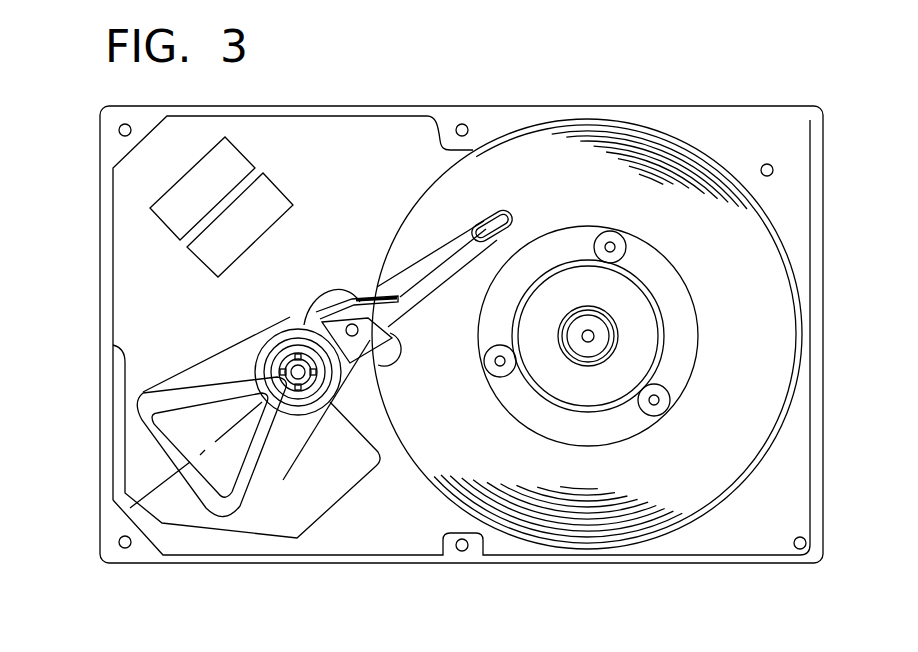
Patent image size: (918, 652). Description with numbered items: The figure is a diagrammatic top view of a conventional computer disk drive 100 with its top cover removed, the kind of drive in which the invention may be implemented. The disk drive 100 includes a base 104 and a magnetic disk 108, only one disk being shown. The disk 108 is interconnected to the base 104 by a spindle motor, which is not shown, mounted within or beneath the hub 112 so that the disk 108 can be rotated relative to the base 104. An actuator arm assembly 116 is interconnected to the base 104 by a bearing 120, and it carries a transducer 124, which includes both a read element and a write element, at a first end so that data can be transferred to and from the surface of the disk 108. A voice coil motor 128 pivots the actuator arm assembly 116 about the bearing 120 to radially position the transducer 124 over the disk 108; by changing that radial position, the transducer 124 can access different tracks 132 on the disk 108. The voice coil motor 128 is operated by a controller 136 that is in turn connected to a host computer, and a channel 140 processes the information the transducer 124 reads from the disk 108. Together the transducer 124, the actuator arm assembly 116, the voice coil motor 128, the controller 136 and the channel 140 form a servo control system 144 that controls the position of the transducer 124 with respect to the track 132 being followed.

The disk drive 100 is at (690, 96).
The base 104 is at (402, 527).
The magnetic disk 108 is at (606, 517).
The hub 112 is at (597, 323).
The actuator arm assembly 116 is at (447, 243).
The bearing 120 is at (288, 364).
The transducer 124 is at (493, 212).
The voice coil motor 128 is at (143, 418).
The tracks 132 is at (578, 538).
The controller 136 is at (170, 218).
The channel 140 is at (205, 252).
The servo control system 144 is at (343, 256).